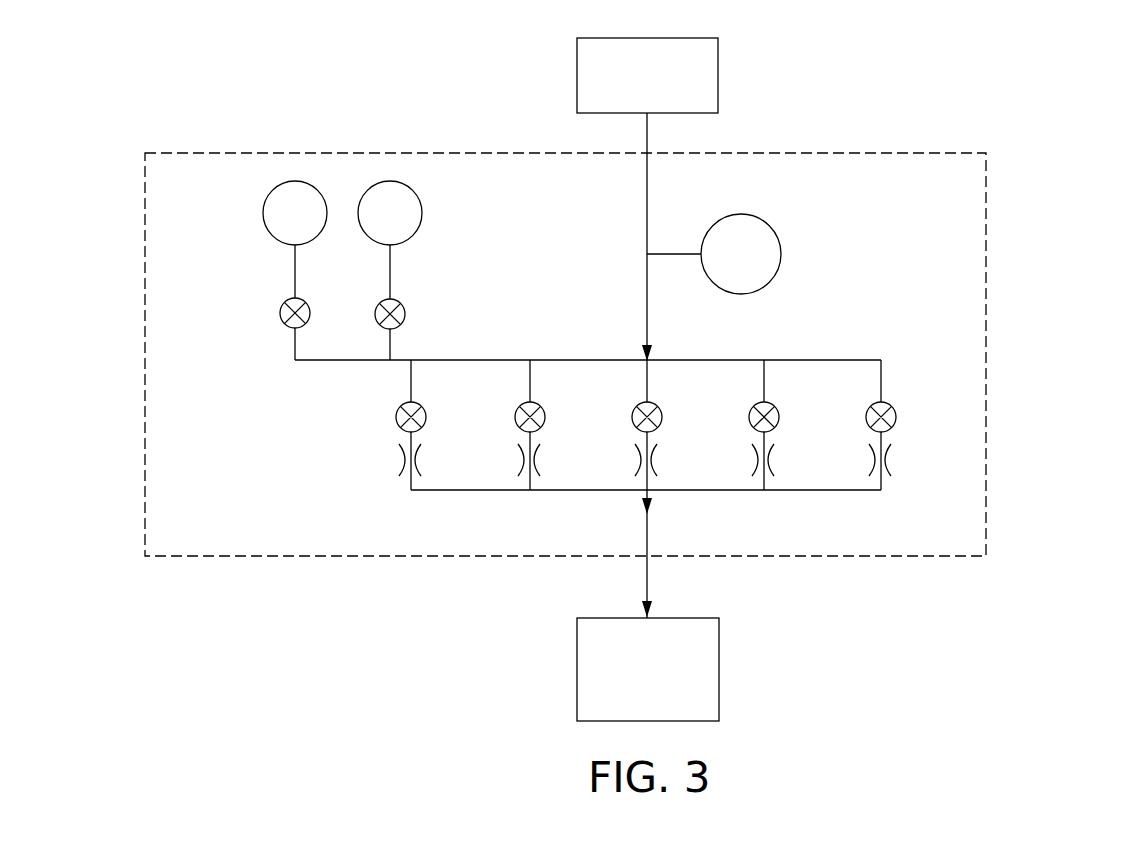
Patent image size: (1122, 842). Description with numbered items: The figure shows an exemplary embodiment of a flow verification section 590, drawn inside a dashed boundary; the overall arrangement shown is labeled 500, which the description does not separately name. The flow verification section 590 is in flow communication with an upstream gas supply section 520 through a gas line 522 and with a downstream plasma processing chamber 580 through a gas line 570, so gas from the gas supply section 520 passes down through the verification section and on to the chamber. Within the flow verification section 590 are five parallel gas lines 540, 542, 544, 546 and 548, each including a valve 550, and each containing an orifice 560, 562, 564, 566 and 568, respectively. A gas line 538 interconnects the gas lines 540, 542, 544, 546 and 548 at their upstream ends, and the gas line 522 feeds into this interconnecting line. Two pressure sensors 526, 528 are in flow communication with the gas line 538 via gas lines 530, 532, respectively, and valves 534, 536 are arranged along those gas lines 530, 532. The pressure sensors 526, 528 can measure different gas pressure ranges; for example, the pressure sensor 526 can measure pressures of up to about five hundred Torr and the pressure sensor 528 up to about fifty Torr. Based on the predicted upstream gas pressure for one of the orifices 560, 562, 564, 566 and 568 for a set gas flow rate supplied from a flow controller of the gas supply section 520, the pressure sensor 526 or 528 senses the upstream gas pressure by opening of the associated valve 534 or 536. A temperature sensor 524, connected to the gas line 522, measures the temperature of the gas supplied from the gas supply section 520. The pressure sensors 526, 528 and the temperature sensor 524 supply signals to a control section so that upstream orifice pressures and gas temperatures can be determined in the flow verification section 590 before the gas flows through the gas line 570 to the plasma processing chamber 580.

The gas supply system 500 is at (1008, 146).
The gas supply section 520 is at (721, 78).
The gas line 522 is at (647, 209).
The temperature sensor 524 is at (775, 229).
The pressure sensor 526 is at (263, 214).
The pressure sensor 528 is at (422, 214).
The gas line 530 is at (295, 271).
The gas line 532 is at (390, 273).
The valve 534 is at (280, 313).
The valve 536 is at (405, 314).
The gas line 538 is at (697, 360).
The gas line 540 is at (411, 381).
The gas line 542 is at (530, 381).
The gas line 544 is at (647, 381).
The gas line 546 is at (764, 381).
The gas line 548 is at (881, 381).
The valve 550 is at (396, 417).
The orifice 560 is at (423, 461).
The orifice 562 is at (542, 461).
The orifice 564 is at (659, 461).
The orifice 566 is at (776, 461).
The orifice 568 is at (893, 461).
The gas line 570 is at (647, 537).
The plasma processing chamber 580 is at (722, 676).
The flow verification section 590 is at (986, 513).